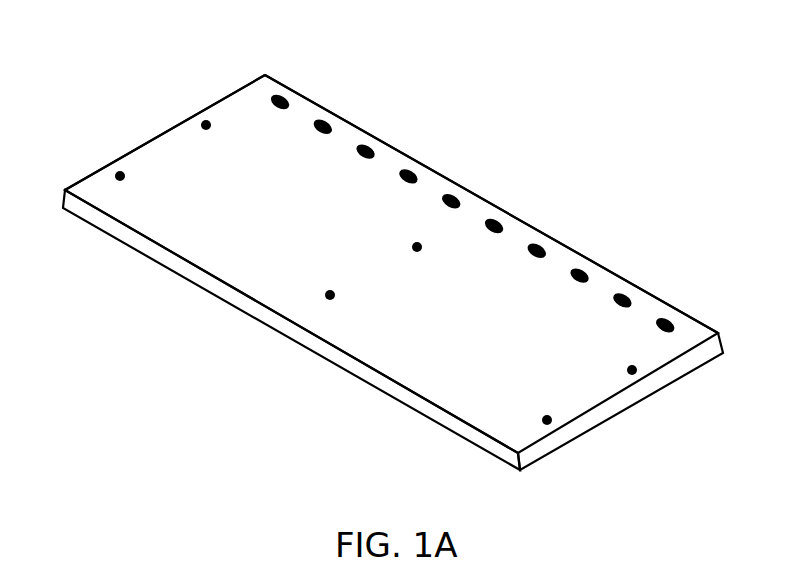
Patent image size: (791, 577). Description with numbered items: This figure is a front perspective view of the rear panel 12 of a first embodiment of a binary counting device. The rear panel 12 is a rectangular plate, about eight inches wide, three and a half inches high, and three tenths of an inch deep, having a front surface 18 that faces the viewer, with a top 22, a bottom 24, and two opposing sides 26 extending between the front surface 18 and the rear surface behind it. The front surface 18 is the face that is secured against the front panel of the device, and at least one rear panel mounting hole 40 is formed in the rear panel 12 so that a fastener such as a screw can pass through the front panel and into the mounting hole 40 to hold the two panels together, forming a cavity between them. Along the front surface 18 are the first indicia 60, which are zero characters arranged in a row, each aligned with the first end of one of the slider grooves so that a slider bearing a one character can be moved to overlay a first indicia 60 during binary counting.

The rear panel 12 is at (450, 147).
The front surface 18 is at (305, 193).
The top 22 is at (613, 278).
The bottom 24 is at (347, 365).
The opposing sides 26 is at (163, 130).
The rear panel mounting hole 40 is at (120, 177).
The first indicia 60 is at (287, 97).